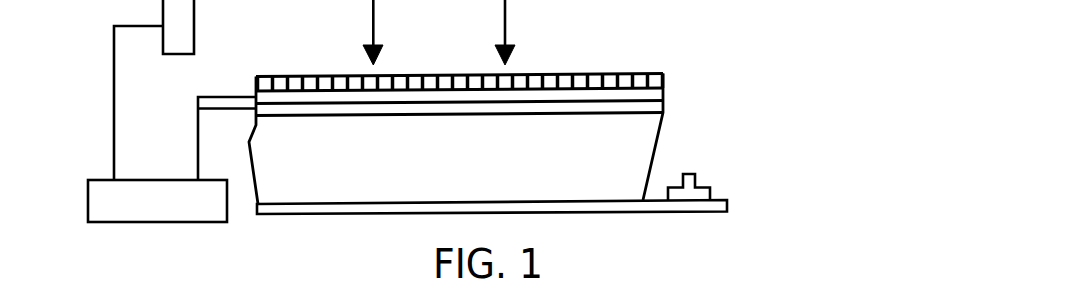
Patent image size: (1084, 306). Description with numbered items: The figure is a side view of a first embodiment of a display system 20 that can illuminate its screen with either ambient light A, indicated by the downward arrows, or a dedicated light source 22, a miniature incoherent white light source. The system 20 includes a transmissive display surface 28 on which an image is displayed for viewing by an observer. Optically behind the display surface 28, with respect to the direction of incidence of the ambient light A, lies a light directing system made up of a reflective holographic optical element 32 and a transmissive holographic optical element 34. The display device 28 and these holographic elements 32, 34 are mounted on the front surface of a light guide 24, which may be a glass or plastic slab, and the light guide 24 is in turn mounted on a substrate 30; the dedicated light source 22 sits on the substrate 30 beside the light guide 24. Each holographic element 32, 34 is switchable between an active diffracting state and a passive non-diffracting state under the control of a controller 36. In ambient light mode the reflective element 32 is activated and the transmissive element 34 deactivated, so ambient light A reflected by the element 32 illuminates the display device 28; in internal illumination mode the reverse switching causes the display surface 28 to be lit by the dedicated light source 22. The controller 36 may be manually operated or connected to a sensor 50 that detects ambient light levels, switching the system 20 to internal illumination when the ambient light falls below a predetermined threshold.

The display system 20 is at (519, 102).
The dedicated light source 22 is at (712, 181).
The light guide 24 is at (647, 182).
The transmissive display surface 28 is at (663, 82).
The substrate 30 is at (727, 201).
The reflective holographic optical element 32 is at (663, 97).
The transmissive holographic optical element 34 is at (663, 110).
The controller 36 is at (88, 193).
The sensor 50 is at (194, 35).
The ambient light A is at (490, 13).